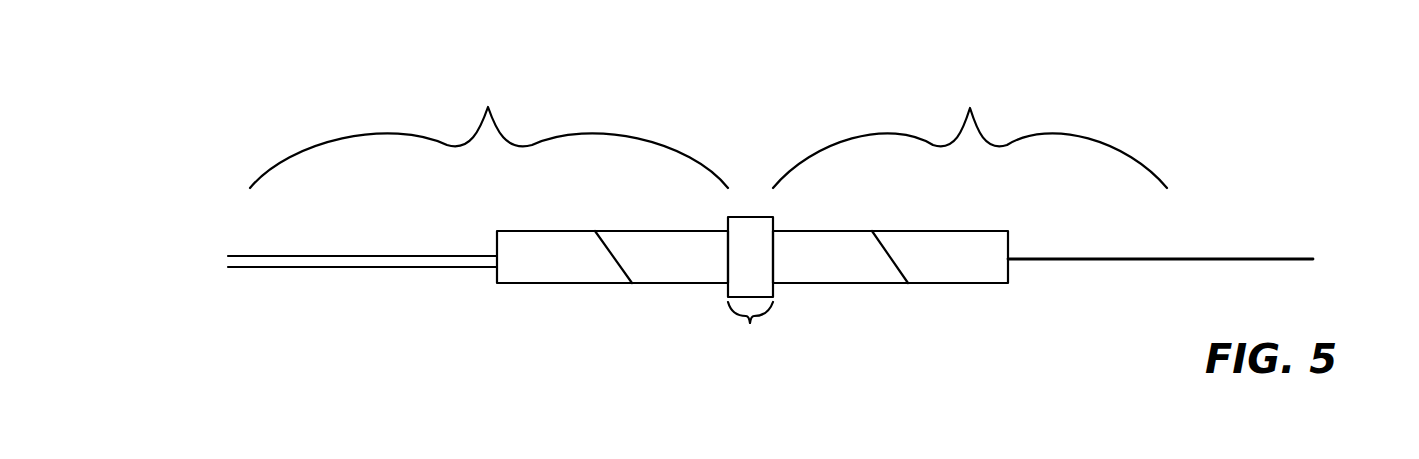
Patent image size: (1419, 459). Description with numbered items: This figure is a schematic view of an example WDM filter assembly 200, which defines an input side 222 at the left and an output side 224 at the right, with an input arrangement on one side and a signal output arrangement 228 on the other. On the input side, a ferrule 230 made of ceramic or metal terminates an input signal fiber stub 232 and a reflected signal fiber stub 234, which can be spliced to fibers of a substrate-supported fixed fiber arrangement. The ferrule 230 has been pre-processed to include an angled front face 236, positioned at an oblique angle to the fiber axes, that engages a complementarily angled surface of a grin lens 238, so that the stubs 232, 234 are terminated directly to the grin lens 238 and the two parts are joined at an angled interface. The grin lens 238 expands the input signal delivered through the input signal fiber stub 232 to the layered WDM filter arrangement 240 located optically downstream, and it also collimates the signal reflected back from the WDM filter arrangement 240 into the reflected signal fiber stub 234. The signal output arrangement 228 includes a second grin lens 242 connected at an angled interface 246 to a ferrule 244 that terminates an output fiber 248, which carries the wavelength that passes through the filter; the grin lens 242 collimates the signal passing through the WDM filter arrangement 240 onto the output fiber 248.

The optical amplifier system 200 is at (779, 111).
The input side 222 is at (180, 264).
The output side 224 is at (1356, 255).
The signal output arrangement 228 is at (970, 132).
The ferrule 230 is at (555, 266).
The input signal fiber stub 232 is at (367, 256).
The reflected signal fiber stub 234 is at (377, 267).
The angled front face 236 is at (615, 260).
The grin lens 238 is at (675, 243).
The layered WDM filter arrangement 240 is at (752, 290).
The grin lens 242 is at (810, 245).
The ferrule 244 is at (933, 250).
The angled interface 246 is at (892, 260).
The output fiber 248 is at (1130, 258).